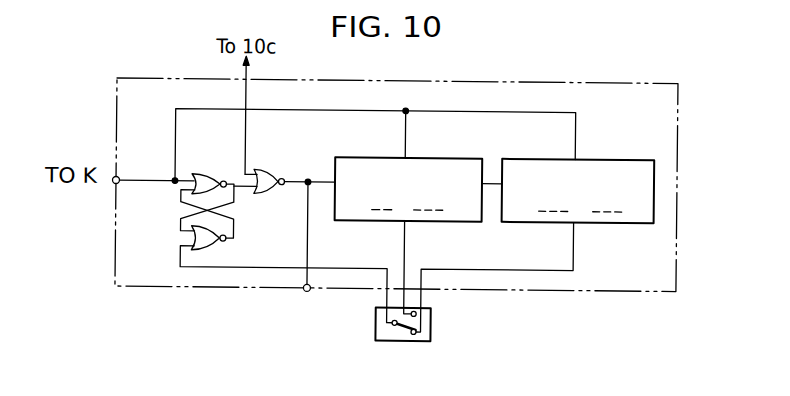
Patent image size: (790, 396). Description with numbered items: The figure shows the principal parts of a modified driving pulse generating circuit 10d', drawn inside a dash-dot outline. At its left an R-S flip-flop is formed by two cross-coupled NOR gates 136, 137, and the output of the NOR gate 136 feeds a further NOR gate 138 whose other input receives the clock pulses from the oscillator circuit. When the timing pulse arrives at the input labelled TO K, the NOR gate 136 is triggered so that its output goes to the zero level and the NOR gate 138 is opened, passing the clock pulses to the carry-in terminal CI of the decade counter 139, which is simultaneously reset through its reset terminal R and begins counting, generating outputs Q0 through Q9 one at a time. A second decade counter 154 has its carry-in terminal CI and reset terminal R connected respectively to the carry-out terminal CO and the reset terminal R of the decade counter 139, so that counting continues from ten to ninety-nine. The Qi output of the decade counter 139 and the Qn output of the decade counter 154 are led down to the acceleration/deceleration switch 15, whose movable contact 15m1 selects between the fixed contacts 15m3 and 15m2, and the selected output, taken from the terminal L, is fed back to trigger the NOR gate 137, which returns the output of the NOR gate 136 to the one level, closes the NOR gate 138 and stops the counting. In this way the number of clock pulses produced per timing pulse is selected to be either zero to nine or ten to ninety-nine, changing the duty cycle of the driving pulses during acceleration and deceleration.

The driving pulse generating circuit 10d' is at (396, 163).
The NOR gate 136 is at (207, 172).
The NOR gate 137 is at (212, 248).
The NOR gate 138 is at (265, 167).
The decade counter 139 is at (444, 148).
The decade counter 154 is at (616, 148).
The acceleration/deceleration switch 15 is at (377, 315).
The switch movable contact 15m1 is at (394, 323).
The switch fixed contact 15m2 is at (416, 332).
The switch fixed contact 15m3 is at (418, 311).
The terminal L is at (306, 290).